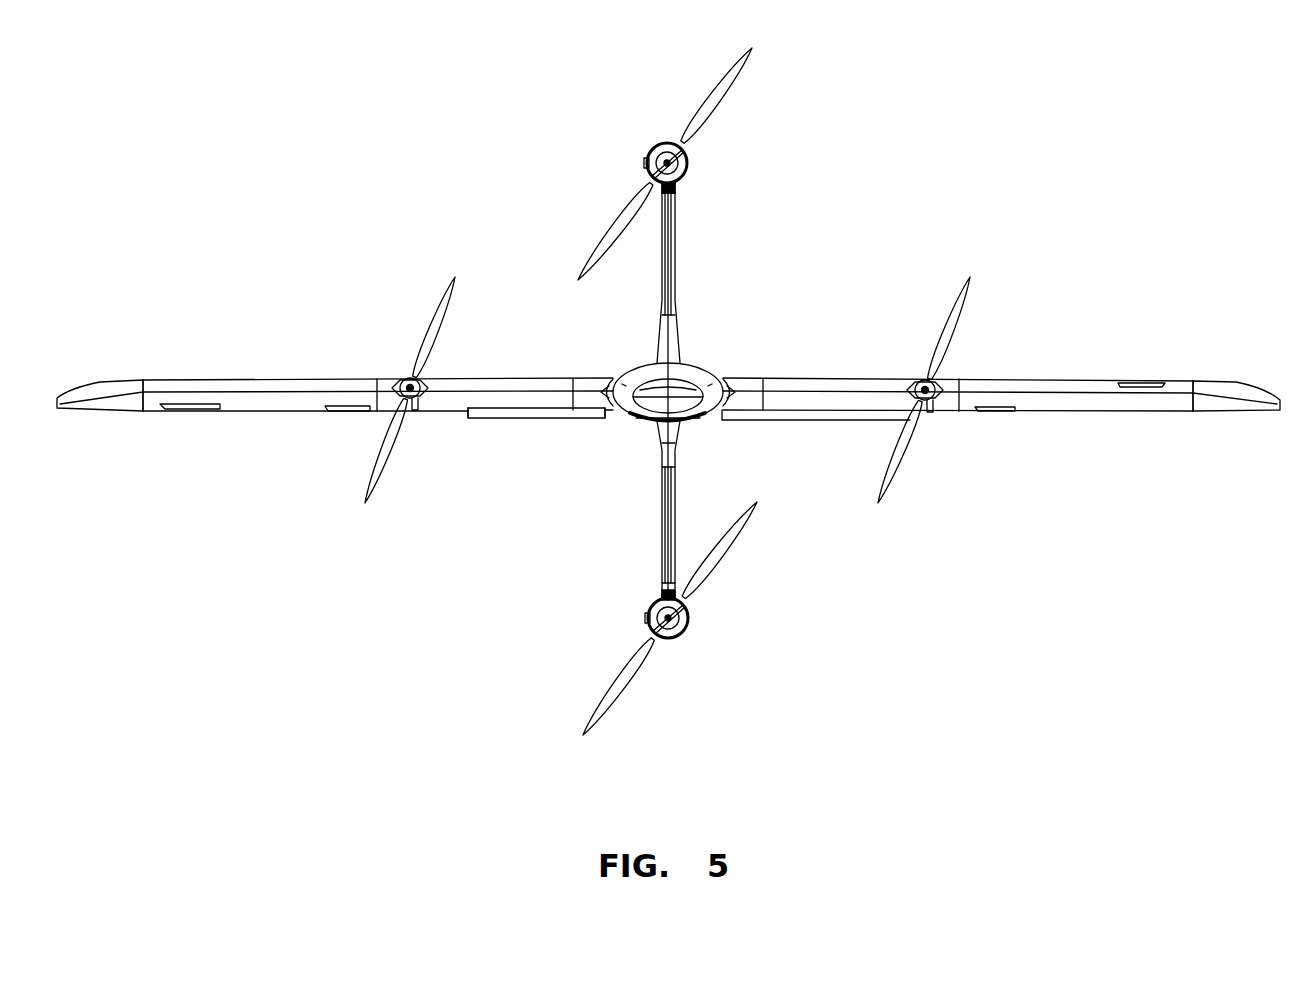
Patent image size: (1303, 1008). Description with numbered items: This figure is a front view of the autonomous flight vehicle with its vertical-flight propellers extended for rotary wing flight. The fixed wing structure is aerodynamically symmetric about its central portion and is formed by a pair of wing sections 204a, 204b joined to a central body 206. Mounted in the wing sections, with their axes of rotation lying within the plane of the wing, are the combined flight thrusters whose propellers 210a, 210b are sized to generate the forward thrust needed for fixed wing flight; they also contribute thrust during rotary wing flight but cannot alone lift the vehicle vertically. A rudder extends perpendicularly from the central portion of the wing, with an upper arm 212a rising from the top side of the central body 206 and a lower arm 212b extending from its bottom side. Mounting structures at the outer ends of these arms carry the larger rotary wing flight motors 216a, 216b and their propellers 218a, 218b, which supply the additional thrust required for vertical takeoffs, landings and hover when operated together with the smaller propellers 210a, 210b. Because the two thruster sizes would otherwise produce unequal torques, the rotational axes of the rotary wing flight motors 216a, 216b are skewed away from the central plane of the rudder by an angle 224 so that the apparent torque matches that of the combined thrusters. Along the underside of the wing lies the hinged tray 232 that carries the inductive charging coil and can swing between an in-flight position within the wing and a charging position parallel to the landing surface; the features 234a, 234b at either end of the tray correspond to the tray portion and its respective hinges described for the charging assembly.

The wing section 204a is at (198, 378).
The wing section 204b is at (1072, 378).
The central body 206 is at (697, 365).
The propeller 210a is at (455, 282).
The propeller 210b is at (953, 300).
The upper arm 212a is at (677, 248).
The lower arm 212b is at (660, 533).
The rotary wing flight motor 216a is at (665, 170).
The rotary wing flight motor 216b is at (697, 619).
The propeller 218a is at (635, 226).
The propeller 218b is at (650, 668).
The angle 224 is at (690, 425).
The hinged tray 232 is at (535, 420).
The first flap end 234a is at (468, 420).
The second flap end 234b is at (605, 420).